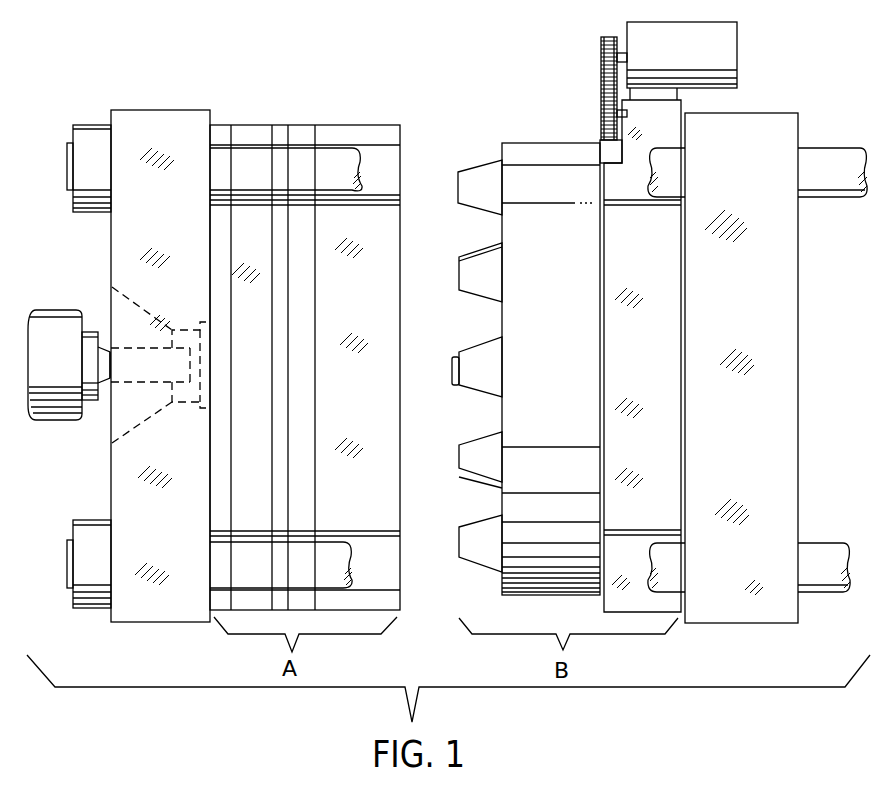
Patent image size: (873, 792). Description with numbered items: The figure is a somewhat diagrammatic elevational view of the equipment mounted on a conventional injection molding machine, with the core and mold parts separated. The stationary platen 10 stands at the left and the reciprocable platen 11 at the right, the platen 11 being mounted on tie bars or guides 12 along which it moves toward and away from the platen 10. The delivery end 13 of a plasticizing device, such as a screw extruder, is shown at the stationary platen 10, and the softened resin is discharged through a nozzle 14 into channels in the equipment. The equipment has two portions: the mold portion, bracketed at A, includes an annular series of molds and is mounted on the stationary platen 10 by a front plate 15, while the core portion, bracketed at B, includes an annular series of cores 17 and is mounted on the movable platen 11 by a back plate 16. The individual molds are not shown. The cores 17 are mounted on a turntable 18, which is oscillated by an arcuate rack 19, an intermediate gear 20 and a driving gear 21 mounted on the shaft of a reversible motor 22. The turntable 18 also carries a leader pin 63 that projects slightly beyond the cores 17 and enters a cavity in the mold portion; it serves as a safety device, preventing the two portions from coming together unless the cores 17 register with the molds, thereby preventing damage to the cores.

The stationary platen 10 is at (145, 622).
The reciprocable platen 11 is at (775, 432).
The tie bars 12 is at (348, 160).
The delivery end of plasticizing device 13 is at (66, 318).
The nozzle 14 is at (200, 370).
The front plate 15 is at (221, 132).
The back plate 16 is at (663, 330).
The cores 17 is at (462, 184).
The turntable 18 is at (529, 143).
The arcuate rack 19 is at (603, 146).
The intermediate gear 20 is at (601, 97).
The driving gear 21 is at (601, 47).
The reversible motor 22 is at (722, 58).
The leader pin 63 is at (452, 375).